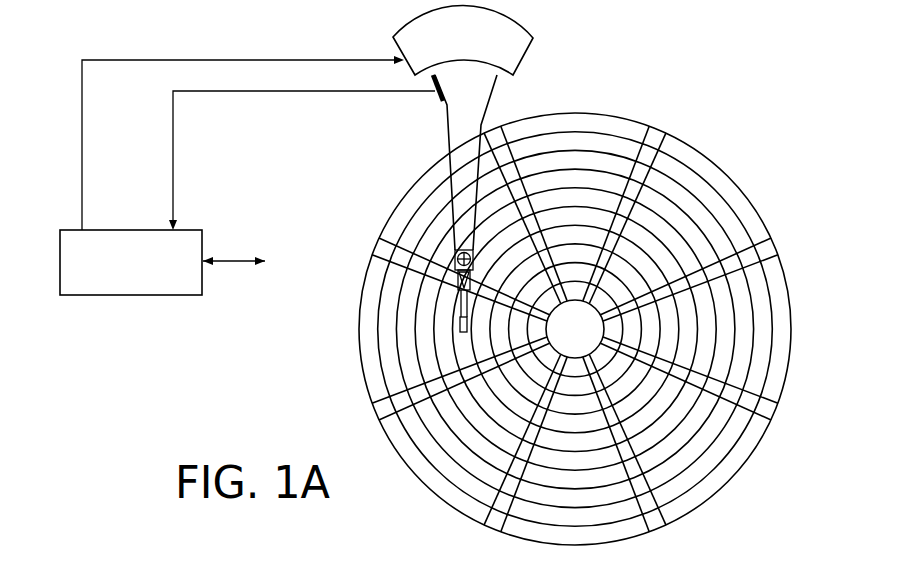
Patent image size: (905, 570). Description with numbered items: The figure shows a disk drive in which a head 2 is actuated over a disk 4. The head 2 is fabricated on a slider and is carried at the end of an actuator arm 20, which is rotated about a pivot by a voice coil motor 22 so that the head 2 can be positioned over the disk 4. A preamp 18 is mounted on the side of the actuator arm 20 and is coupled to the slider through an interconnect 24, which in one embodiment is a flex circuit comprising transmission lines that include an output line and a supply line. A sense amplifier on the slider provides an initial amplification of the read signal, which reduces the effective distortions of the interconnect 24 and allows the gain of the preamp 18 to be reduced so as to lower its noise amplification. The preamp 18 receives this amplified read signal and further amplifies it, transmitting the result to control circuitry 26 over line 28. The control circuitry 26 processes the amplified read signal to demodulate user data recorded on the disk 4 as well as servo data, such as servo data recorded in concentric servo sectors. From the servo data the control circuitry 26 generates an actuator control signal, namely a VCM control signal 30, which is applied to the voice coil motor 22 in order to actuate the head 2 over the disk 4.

The head 2 is at (448, 335).
The disk 4 is at (725, 161).
The preamp 18 is at (437, 100).
The actuator arm 20 is at (478, 94).
The voice coil motor 22 is at (530, 56).
The interconnect 24 is at (450, 145).
The control circuitry 26 is at (130, 297).
The line 28 is at (255, 92).
The VCM control signal 30 is at (82, 145).